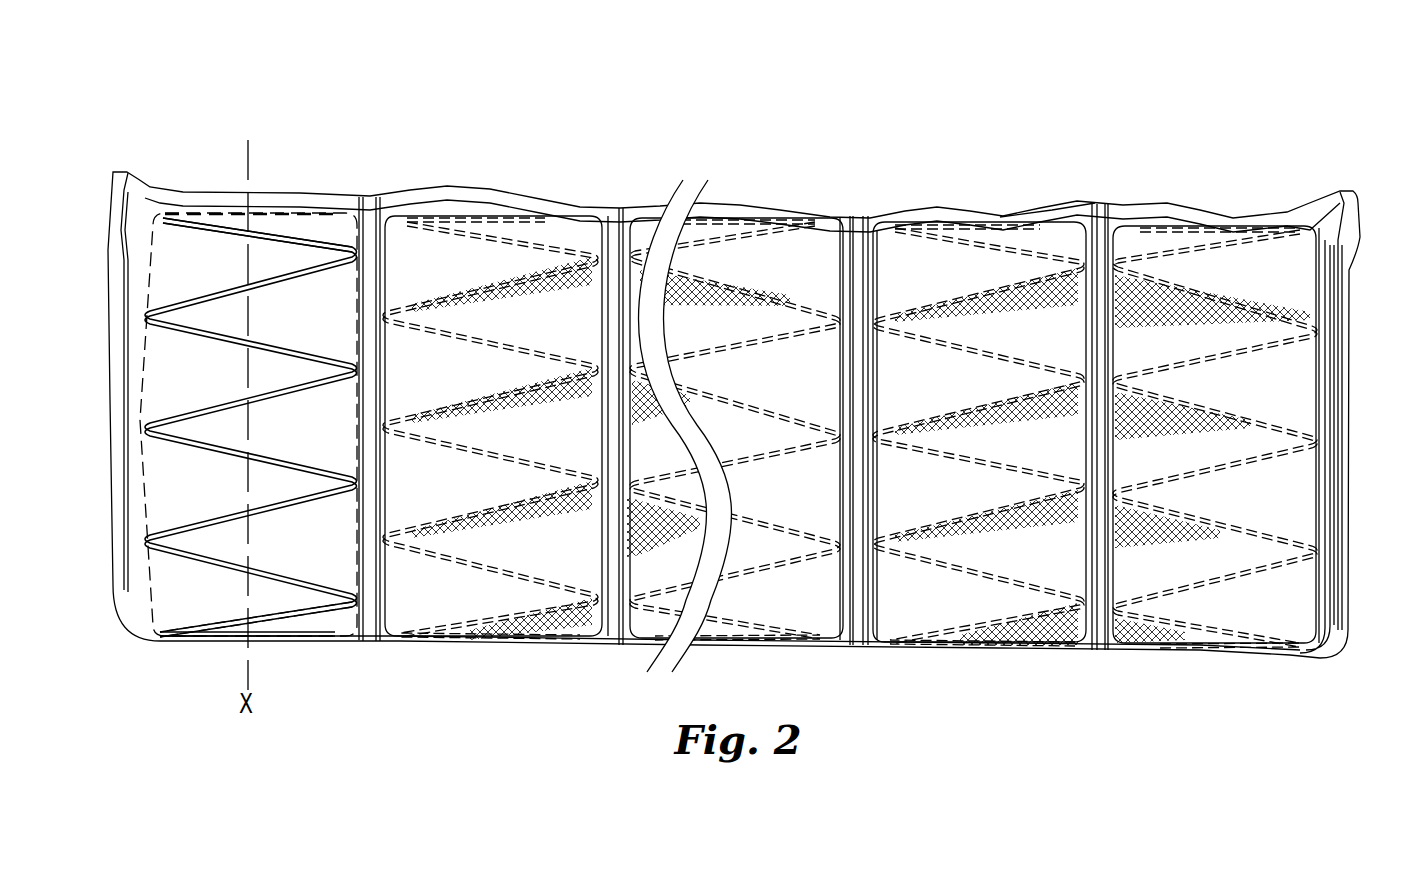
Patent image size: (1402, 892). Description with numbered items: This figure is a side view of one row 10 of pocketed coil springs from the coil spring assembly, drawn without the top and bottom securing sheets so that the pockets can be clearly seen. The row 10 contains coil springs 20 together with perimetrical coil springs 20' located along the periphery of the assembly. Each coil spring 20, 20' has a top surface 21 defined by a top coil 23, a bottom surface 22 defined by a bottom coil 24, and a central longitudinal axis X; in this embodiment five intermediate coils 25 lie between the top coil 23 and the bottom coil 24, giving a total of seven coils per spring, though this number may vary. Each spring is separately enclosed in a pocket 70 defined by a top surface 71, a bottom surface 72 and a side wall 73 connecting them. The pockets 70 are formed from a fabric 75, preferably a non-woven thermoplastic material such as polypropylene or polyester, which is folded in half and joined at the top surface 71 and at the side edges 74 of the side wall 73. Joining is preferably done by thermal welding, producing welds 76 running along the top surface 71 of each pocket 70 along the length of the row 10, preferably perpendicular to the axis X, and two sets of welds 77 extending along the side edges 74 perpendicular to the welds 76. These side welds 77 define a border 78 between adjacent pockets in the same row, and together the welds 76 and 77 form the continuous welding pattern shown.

The row 10 is at (375, 131).
The coil spring 20 is at (734, 389).
The perimetrical coil spring 20' is at (729, 433).
The top surface 21 is at (272, 212).
The bottom surface 22 is at (185, 643).
The top coil 23 is at (208, 212).
The bottom coil 24 is at (292, 643).
The intermediate coils 25 is at (365, 255).
The pocket 70 is at (1223, 270).
The top surface 71 is at (1155, 220).
The bottom surface 72 is at (1150, 647).
The side wall 73 is at (1253, 490).
The side edges 74 is at (877, 627).
The fabric 75 is at (573, 287).
The welds 76 is at (1052, 210).
The welds 77 is at (603, 643).
The border 78 is at (852, 638).